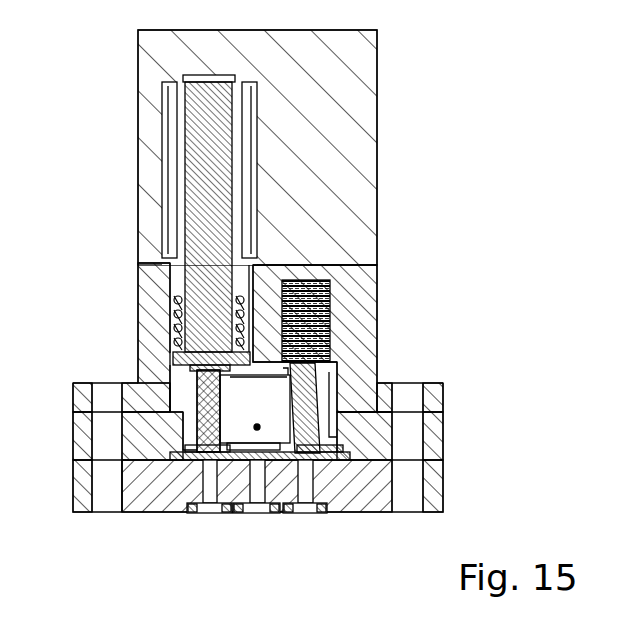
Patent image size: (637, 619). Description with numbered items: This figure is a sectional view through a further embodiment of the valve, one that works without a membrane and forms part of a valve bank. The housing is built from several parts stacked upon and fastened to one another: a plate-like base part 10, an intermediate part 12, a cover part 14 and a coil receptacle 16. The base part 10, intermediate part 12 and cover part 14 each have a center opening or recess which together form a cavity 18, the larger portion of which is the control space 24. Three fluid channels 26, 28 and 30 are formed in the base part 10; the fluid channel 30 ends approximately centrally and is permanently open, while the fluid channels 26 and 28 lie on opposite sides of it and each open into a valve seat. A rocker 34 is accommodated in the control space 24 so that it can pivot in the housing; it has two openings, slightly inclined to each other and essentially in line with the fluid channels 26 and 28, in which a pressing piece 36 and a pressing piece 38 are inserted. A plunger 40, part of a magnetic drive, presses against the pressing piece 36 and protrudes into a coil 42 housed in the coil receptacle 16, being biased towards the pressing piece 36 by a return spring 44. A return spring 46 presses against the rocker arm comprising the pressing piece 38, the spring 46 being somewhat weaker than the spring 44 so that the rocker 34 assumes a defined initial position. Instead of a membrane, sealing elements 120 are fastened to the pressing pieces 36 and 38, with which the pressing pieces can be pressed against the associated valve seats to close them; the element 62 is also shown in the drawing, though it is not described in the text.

The base part 10 is at (78, 494).
The intermediate part 12 is at (78, 429).
The cover part 14 is at (78, 393).
The coil receptacle 16 is at (148, 173).
The cavity 18 is at (173, 390).
The control space 24 is at (173, 390).
The fluid channel 26 is at (206, 498).
The fluid channel 28 is at (303, 498).
The fluid channel 30 is at (255, 498).
The rocker 34 is at (262, 385).
The pressing piece 36 is at (123, 485).
The pressing piece 38 is at (300, 400).
The plunger 40 is at (188, 167).
The coil 42 is at (162, 120).
The return spring 44 is at (142, 295).
The return spring 46 is at (330, 308).
The channel 62 is at (320, 462).
The sealing elements 120 is at (190, 463).